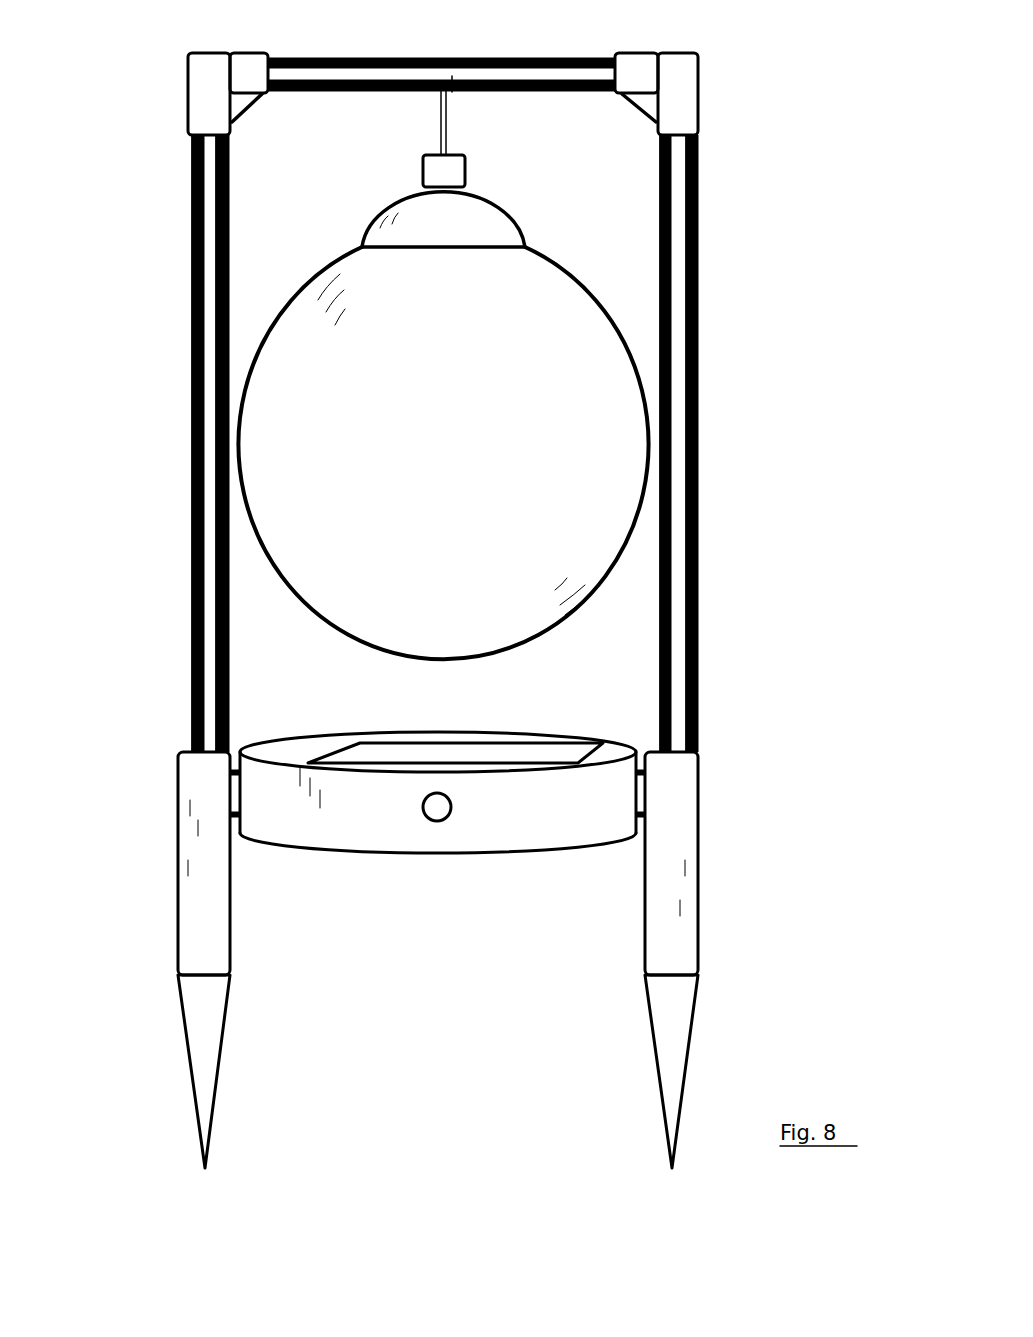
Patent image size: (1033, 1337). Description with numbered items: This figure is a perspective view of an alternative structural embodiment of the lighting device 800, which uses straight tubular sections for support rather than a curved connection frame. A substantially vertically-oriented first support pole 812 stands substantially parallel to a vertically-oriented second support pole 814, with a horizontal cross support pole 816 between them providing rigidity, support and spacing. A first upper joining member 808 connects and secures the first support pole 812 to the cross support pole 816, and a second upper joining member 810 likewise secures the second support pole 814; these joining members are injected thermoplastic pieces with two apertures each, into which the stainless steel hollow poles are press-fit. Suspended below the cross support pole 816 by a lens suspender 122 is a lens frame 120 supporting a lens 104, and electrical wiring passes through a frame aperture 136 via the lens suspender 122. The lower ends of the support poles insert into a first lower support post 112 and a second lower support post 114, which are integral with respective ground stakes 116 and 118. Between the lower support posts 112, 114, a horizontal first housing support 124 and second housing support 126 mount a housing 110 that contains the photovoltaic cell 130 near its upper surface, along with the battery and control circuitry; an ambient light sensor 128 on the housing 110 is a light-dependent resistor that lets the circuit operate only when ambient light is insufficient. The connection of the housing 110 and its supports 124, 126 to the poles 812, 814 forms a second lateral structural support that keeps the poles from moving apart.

The lighting device 800 is at (112, 240).
The first upper joining member 808 is at (207, 78).
The second upper joining member 810 is at (680, 72).
The first support pole 812 is at (215, 420).
The second support pole 814 is at (685, 355).
The cross support pole 816 is at (393, 72).
The frame aperture 136 is at (452, 76).
The lens suspender 122 is at (440, 105).
The lens frame 120 is at (480, 215).
The lens 104 is at (570, 307).
The housing 110 is at (498, 820).
The photovoltaic cell 130 is at (525, 753).
The ambient light sensor 128 is at (433, 810).
The first housing support 124 is at (238, 792).
The second housing support 126 is at (632, 800).
The first lower support post 112 is at (198, 778).
The second lower support post 114 is at (668, 783).
The ground stake 116 is at (197, 1017).
The ground stake 118 is at (672, 1015).